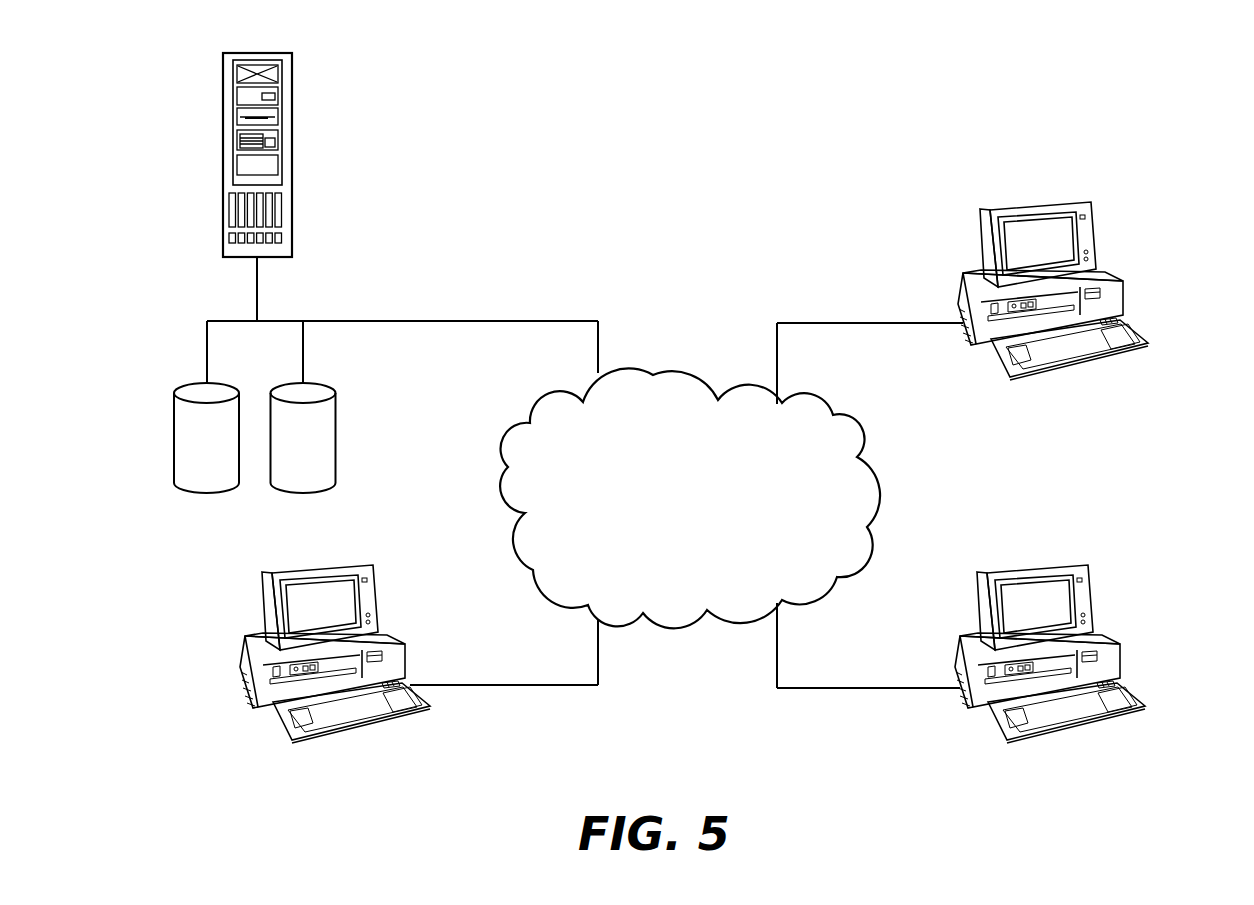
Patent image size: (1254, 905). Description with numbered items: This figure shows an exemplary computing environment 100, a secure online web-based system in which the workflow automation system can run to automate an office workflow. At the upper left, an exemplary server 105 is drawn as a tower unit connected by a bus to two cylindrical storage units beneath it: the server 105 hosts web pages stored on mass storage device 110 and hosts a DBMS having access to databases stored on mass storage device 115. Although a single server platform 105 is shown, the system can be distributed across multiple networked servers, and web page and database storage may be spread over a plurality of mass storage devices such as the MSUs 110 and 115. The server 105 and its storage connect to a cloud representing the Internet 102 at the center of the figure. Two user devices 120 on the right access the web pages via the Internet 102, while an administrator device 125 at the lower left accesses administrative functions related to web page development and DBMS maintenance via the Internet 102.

The computing environment 100 is at (1115, 82).
The Internet 102 is at (729, 516).
The server 105 is at (288, 110).
The mass storage device 110 is at (187, 485).
The mass storage device 115 is at (283, 485).
The user device 120 is at (1076, 367).
The administrator device 125 is at (358, 730).